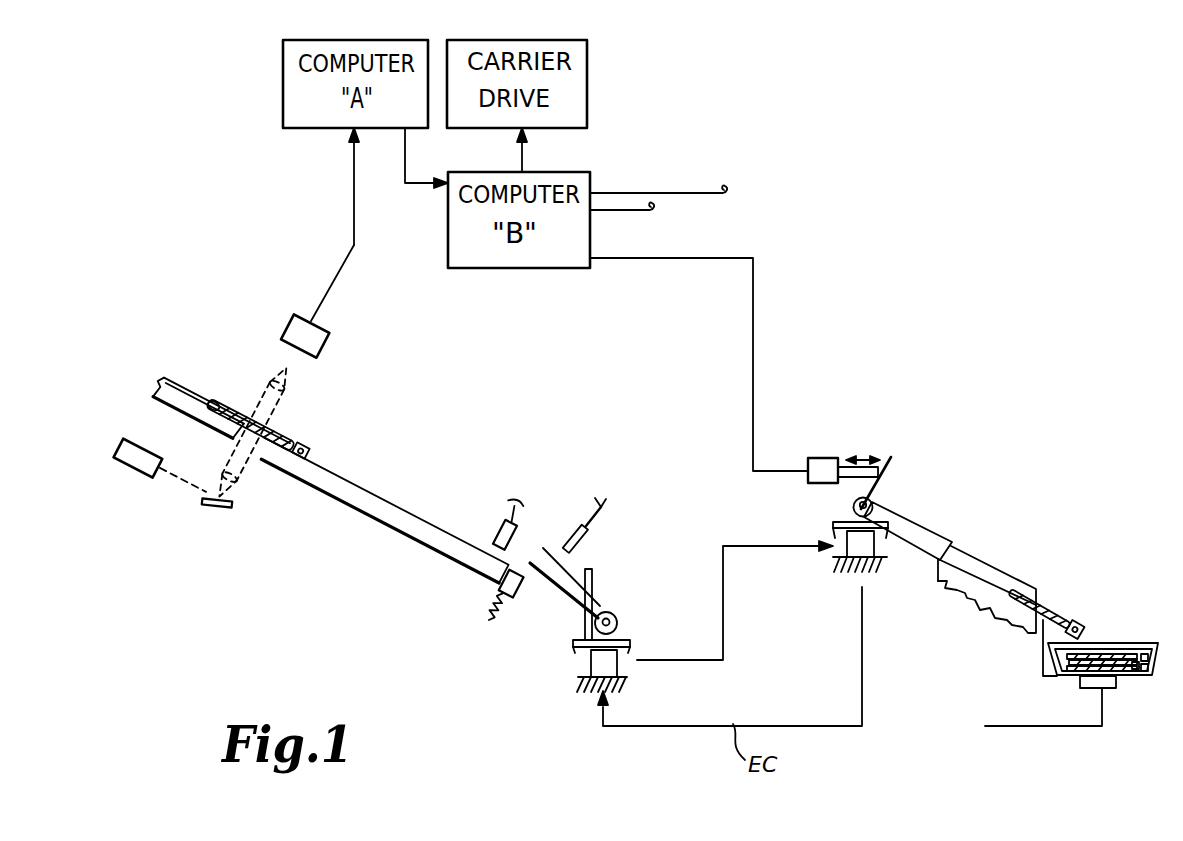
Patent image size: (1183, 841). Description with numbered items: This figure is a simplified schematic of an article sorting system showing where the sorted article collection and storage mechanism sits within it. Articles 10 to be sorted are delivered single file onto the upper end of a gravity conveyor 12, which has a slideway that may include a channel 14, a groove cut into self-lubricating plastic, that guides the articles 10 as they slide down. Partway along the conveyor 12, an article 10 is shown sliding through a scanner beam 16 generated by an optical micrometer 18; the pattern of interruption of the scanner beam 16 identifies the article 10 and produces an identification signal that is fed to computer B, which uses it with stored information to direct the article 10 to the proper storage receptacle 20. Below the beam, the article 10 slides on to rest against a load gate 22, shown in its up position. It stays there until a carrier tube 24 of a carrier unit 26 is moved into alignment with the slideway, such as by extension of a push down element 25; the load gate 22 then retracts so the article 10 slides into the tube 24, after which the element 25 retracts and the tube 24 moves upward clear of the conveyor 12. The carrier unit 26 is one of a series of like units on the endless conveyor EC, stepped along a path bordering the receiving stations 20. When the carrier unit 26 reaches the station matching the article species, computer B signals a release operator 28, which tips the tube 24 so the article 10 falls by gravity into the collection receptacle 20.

The article 10 is at (226, 412).
The gravity conveyor 12 is at (321, 517).
The channel 14 is at (380, 497).
The scanner beam 16 is at (280, 414).
The optical micrometer 18 is at (336, 384).
The storage receptacle 20 is at (1143, 643).
The load gate 22 is at (497, 538).
The carrier tube 24 is at (567, 580).
The push down element 25 is at (567, 533).
The carrier unit 26 is at (620, 632).
The release operator 28 is at (822, 458).